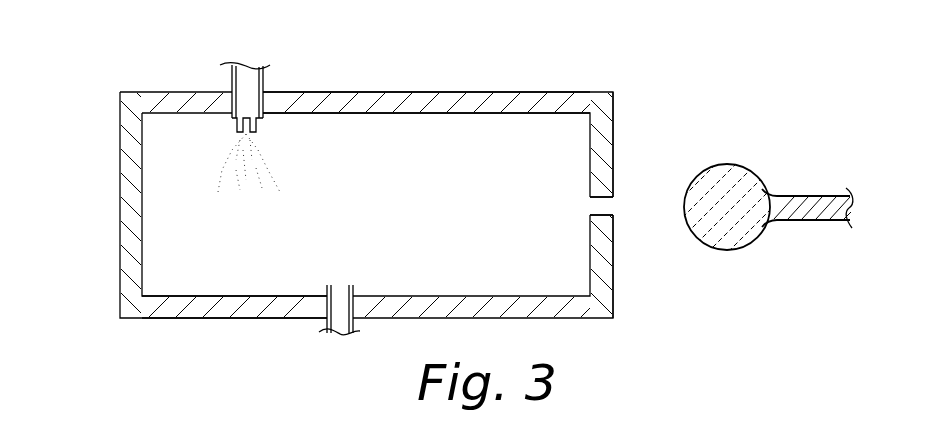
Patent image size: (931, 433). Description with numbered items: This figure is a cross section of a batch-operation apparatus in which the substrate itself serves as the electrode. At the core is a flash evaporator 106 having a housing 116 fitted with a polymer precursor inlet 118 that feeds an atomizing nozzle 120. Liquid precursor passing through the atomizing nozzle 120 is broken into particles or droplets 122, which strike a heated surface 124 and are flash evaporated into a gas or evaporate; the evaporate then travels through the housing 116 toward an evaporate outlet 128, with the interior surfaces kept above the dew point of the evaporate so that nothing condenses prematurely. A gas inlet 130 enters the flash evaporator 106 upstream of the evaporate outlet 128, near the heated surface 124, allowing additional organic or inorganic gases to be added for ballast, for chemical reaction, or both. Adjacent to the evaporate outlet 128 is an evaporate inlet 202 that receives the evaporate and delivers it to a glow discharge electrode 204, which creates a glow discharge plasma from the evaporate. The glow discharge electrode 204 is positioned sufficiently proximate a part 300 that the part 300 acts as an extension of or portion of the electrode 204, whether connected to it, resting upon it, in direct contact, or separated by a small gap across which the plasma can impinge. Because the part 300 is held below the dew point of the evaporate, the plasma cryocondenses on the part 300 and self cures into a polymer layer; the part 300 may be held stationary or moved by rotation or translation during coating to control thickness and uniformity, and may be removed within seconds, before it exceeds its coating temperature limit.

The flash evaporator 106 is at (100, 213).
The housing 116 is at (364, 92).
The polymer precursor inlet 118 is at (220, 80).
The atomizing nozzle 120 is at (270, 140).
The particles or droplets 122 is at (228, 200).
The heated surface 124 is at (240, 296).
The evaporate outlet 128 is at (587, 209).
The gas inlet 130 is at (326, 342).
The evaporate inlet 202 is at (617, 206).
The part 300 is at (753, 158).
The glow discharge electrode 204 is at (816, 197).